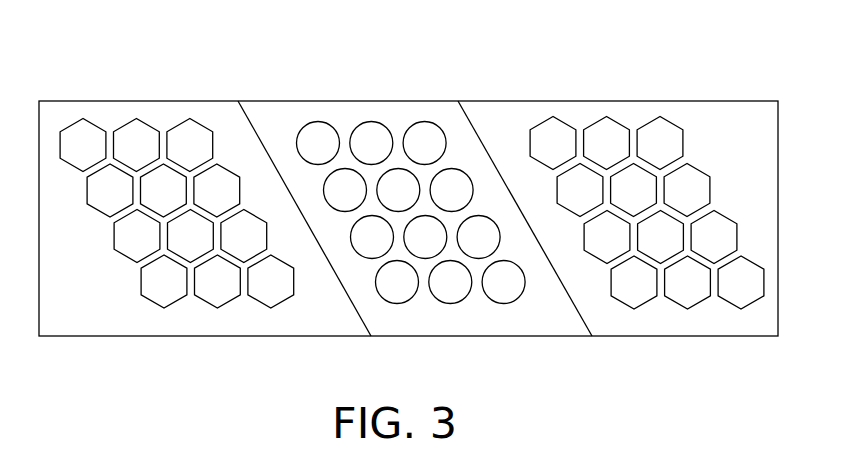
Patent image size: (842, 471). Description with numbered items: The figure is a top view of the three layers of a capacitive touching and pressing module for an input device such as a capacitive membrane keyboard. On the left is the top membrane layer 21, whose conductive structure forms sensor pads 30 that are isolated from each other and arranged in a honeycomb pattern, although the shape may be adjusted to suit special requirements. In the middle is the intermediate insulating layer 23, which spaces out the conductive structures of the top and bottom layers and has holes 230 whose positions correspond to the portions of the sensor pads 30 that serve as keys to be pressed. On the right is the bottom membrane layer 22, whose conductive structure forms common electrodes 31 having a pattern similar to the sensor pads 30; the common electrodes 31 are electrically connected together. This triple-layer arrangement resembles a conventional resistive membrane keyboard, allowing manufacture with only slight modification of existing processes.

The top membrane layer 21 is at (162, 117).
The sensor pads 30 is at (85, 130).
The intermediate insulating layer 23 is at (292, 122).
The holes 230 is at (370, 137).
The bottom membrane layer 22 is at (633, 117).
The common electrodes 31 is at (548, 130).